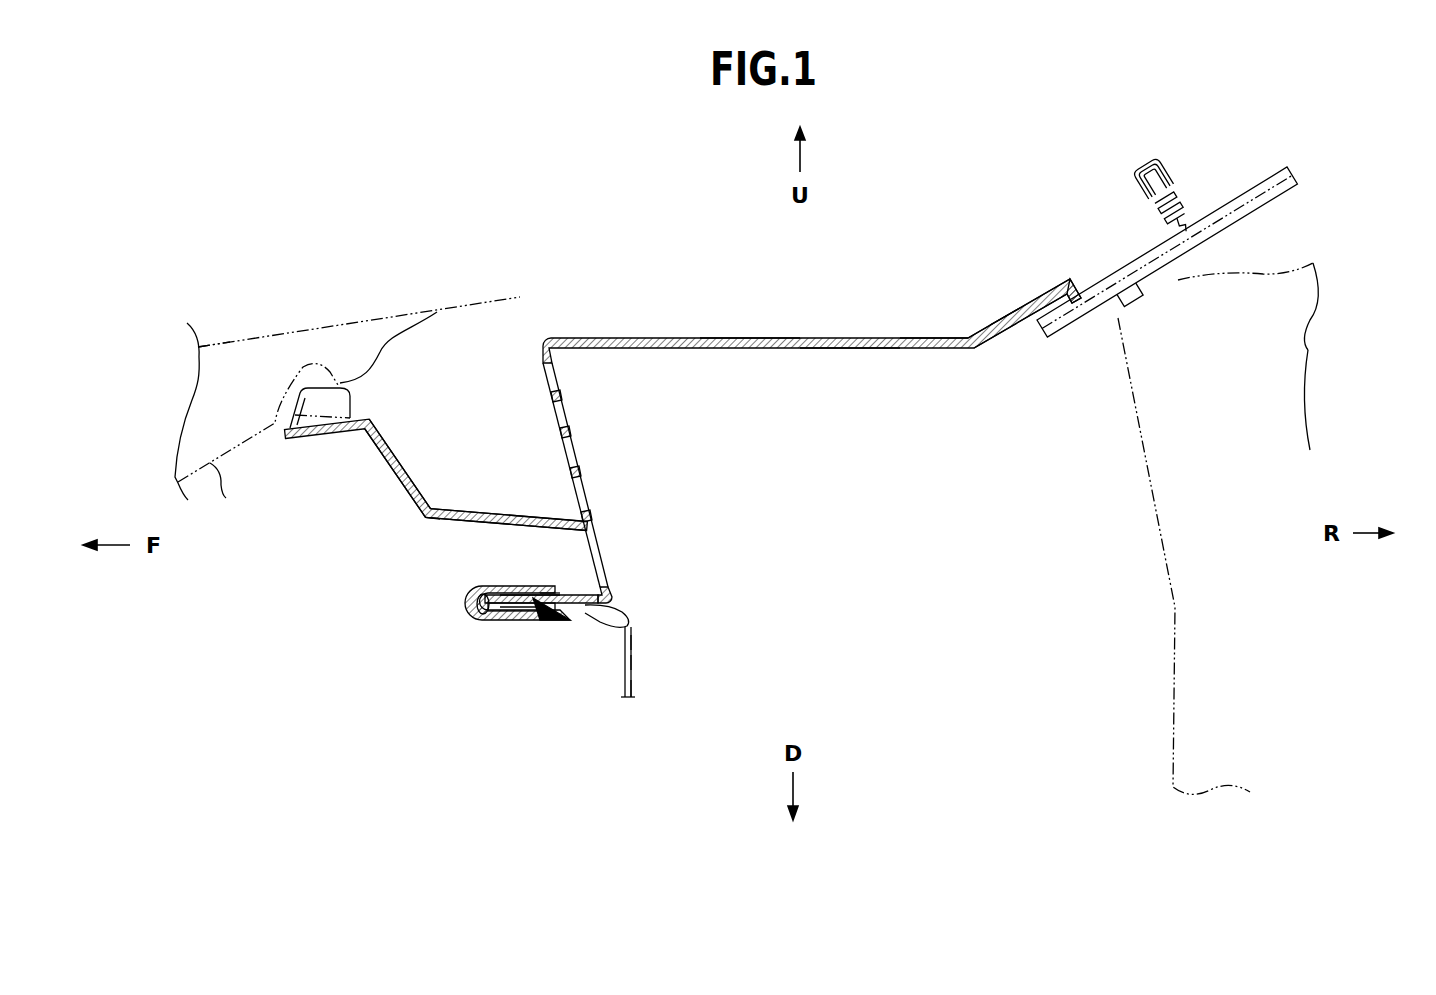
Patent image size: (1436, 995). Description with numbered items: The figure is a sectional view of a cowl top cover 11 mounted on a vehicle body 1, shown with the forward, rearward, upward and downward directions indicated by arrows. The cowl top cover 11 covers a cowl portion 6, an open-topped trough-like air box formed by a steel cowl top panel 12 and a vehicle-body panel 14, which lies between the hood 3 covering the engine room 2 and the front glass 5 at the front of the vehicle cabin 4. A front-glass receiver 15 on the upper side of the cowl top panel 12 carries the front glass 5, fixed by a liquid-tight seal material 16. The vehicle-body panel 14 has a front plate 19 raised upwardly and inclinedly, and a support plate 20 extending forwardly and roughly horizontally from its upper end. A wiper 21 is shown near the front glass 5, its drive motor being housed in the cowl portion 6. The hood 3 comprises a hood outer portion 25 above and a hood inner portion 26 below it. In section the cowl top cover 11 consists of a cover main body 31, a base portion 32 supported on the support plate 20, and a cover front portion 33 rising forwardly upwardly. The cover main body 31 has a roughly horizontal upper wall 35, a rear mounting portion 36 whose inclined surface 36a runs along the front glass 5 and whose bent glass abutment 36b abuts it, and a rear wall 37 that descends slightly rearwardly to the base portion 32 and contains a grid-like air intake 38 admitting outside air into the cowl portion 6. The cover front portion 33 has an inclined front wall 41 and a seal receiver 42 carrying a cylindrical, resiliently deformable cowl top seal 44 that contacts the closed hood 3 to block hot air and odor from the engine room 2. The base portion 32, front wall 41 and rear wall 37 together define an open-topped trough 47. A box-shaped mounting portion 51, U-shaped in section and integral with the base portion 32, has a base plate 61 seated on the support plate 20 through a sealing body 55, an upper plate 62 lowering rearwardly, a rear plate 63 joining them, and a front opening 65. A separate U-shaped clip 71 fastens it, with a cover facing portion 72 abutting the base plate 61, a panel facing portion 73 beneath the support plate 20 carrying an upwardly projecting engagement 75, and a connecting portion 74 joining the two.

The vehicle body 1 is at (640, 660).
The engine room 2 is at (347, 587).
The hood 3 is at (360, 320).
The vehicle cabin 4 is at (1265, 458).
The front glass 5 is at (1230, 200).
The cowl portion 6 is at (928, 363).
The cowl top cover 11 is at (816, 409).
The cowl top panel 12 is at (1138, 470).
The vehicle-body panel 14 is at (640, 690).
The front-glass receiver 15 is at (1180, 290).
The seal material 16 is at (1130, 294).
The front plate 19 is at (640, 640).
The support plate 20 is at (540, 604).
The wiper 21 is at (1163, 199).
The hood outer portion 25 is at (230, 337).
The hood inner portion 26 is at (226, 498).
The cover main body 31 is at (838, 350).
The base portion 32 is at (480, 620).
The cover front portion 33 is at (393, 485).
The upper wall 35 is at (775, 350).
The rear mounting portion 36 is at (1045, 290).
The inclined surface 36a is at (1010, 312).
The glass abutment 36b is at (1082, 285).
The rear wall 37 is at (573, 438).
The air intake 38 is at (558, 382).
The front wall 41 is at (372, 452).
The seal receiver 42 is at (320, 433).
The cowl top seal 44 is at (275, 460).
The trough 47 is at (435, 427).
The mounting portion 51 is at (500, 625).
The sealing body 55 is at (630, 612).
The base plate 61 is at (587, 590).
The upper plate 62 is at (512, 513).
The rear plate 63 is at (602, 540).
The opening 65 is at (438, 547).
The clip 71 is at (522, 625).
The cover facing portion 72 is at (512, 590).
The panel facing portion 73 is at (555, 625).
The connecting portion 74 is at (476, 592).
The engagement 75 is at (545, 590).